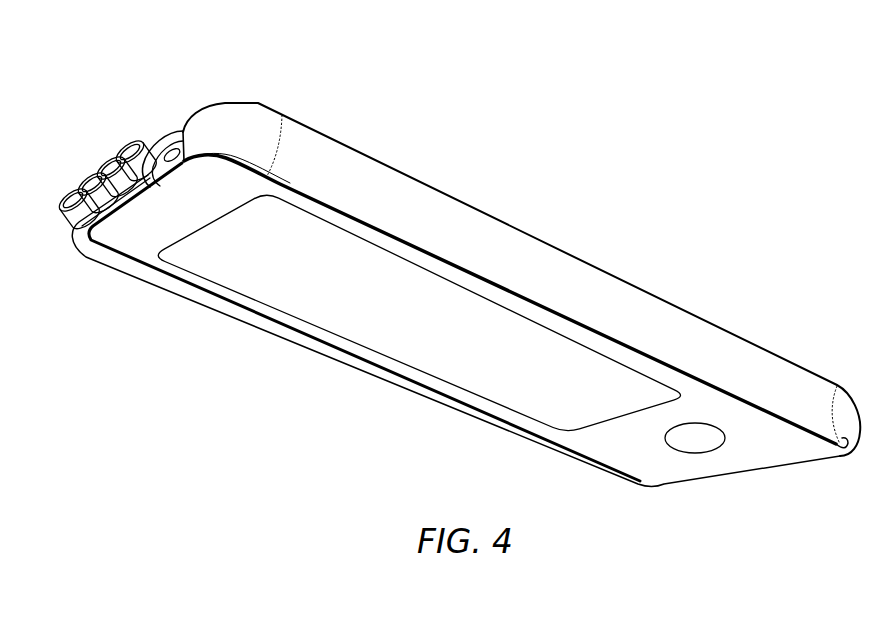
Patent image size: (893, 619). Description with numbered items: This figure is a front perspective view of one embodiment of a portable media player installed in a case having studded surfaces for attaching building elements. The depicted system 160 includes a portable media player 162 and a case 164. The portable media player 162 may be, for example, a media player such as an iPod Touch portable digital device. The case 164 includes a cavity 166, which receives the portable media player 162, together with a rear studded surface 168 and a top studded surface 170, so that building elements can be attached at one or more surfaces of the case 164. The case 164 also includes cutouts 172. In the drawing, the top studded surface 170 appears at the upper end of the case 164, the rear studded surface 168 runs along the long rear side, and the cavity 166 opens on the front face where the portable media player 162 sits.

The system 160 is at (118, 96).
The portable media player 162 is at (777, 449).
The case 164 is at (653, 325).
The cavity 166 is at (267, 345).
The rear studded surface 168 is at (533, 215).
The top studded surface 170 is at (88, 157).
The cutouts 172 is at (175, 117).